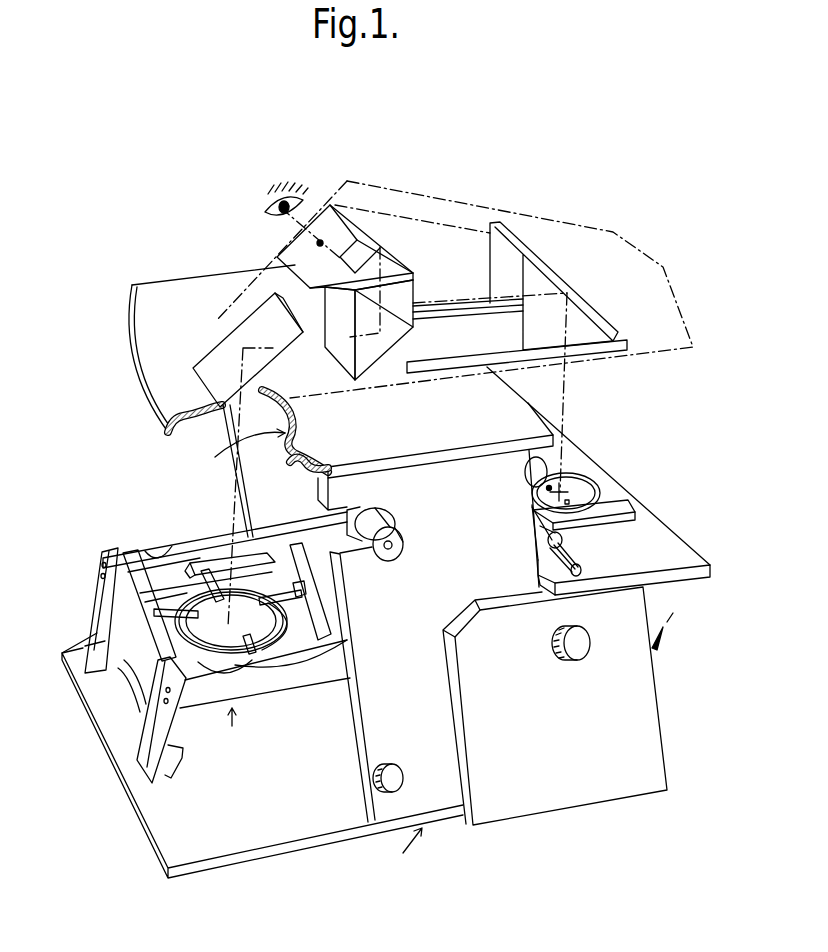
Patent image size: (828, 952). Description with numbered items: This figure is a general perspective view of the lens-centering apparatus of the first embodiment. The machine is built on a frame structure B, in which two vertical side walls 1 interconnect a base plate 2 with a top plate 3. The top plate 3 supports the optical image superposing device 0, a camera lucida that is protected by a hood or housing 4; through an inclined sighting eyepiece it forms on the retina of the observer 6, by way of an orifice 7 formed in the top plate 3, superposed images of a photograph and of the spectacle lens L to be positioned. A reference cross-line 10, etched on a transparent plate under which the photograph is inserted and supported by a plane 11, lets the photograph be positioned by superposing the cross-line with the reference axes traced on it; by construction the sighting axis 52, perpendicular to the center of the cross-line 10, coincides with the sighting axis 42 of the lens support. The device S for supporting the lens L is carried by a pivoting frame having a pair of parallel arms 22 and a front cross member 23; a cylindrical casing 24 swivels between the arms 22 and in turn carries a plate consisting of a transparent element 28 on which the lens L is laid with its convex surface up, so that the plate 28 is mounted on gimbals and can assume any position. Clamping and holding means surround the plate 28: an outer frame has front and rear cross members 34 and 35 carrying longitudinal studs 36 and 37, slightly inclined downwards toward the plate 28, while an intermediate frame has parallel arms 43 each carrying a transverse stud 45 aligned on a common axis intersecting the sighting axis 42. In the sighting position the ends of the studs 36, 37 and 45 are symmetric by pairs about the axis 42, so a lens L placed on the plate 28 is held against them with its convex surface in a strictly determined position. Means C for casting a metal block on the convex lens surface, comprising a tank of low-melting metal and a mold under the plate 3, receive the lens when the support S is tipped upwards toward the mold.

The optical image superposing device 0 is at (431, 197).
The hood or housing 4 is at (523, 218).
The observer 6 is at (276, 211).
The orifice 7 is at (273, 388).
The sighting axis 42 is at (238, 410).
The means for casting a metal block C is at (242, 487).
The sighting axis 52 is at (563, 399).
The top plate 3 is at (530, 430).
The reference cross-line 10 is at (567, 486).
The plane 11 is at (645, 521).
The parallel arms 22 is at (152, 585).
The transverse studs 45 is at (213, 577).
The parallel arms 43 is at (248, 548).
The longitudinal stud 36 is at (170, 610).
The front cross member 23 is at (158, 673).
The front cross member 34 is at (155, 685).
The cylindrical casing 24 is at (198, 681).
The spectacle lens L is at (268, 642).
The transparent element 28 is at (325, 643).
The rear cross member 35 is at (318, 618).
The longitudinal stud 37 is at (300, 600).
The vertical side walls 1 is at (388, 733).
The base plate 2 is at (258, 830).
The lens supporting device S is at (232, 731).
The frame structure B is at (405, 851).